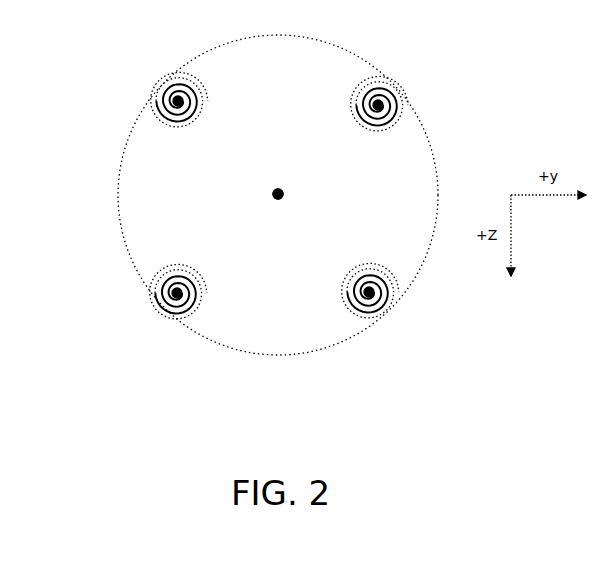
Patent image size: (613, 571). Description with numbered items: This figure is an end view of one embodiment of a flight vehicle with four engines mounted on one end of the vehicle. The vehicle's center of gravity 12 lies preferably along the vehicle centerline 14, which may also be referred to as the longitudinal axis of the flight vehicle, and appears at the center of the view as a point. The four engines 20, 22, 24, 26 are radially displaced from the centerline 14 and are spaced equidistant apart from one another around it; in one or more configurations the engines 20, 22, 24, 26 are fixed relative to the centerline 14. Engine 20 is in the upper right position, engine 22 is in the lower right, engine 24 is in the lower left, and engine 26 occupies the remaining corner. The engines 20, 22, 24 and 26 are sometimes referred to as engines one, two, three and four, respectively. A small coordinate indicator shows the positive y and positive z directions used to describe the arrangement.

The center of gravity 12 is at (281, 187).
The vehicle centerline 14 is at (278, 194).
The engine 20 is at (393, 72).
The engine 22 is at (390, 316).
The engine 24 is at (155, 316).
The engine 26 is at (163, 74).